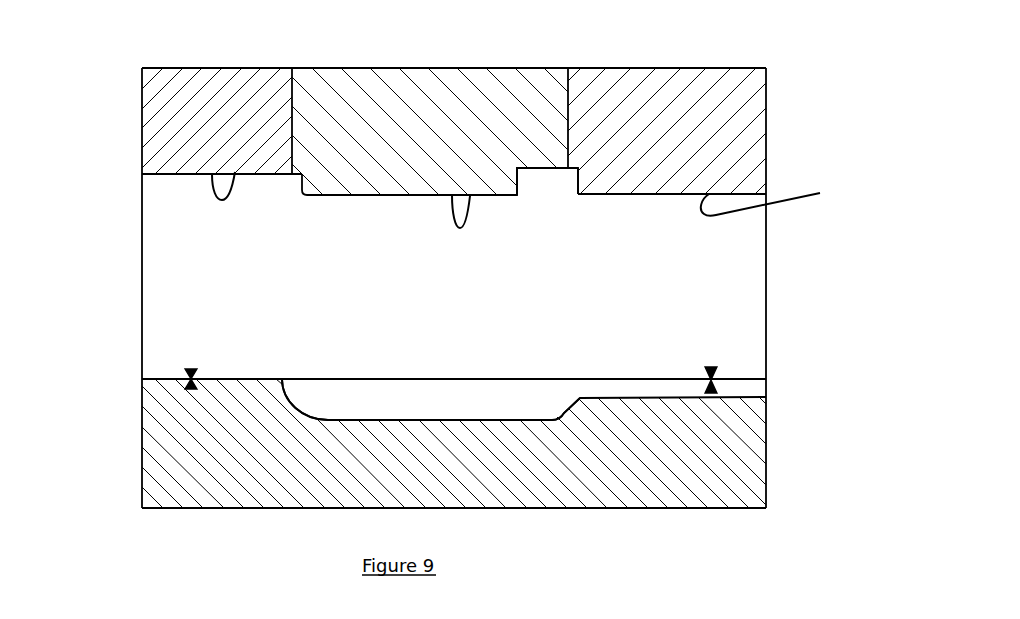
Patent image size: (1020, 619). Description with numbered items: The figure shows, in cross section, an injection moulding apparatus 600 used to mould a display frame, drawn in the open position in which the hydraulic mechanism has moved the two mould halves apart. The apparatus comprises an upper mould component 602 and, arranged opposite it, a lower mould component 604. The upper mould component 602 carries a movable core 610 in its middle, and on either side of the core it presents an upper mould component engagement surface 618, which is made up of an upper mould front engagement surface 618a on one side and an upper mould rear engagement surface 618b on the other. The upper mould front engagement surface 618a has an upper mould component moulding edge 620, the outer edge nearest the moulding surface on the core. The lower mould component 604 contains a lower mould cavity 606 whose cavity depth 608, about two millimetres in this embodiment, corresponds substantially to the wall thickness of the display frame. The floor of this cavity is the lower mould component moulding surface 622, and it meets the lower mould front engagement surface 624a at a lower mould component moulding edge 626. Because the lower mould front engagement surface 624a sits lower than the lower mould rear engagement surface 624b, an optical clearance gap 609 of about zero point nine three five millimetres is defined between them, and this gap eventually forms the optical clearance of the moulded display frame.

The injection moulding apparatus 600 is at (797, 258).
The upper mould component 602 is at (192, 96).
The lower mould component 604 is at (166, 446).
The lower mould cavity 606 is at (534, 398).
The cavity depth 608 is at (357, 335).
The optical clearance gap 609 is at (625, 453).
The movable core 610 is at (414, 106).
The upper mould component engagement surface 618 is at (470, 196).
The upper mould front engagement surface 618a is at (786, 185).
The upper mould rear engagement surface 618b is at (235, 172).
The upper mould component moulding edge 620 is at (584, 184).
The lower mould component moulding surface 622 is at (331, 401).
The lower mould front engagement surface 624a is at (735, 397).
The lower mould rear engagement surface 624b is at (234, 378).
The lower mould component moulding edge 626 is at (586, 408).